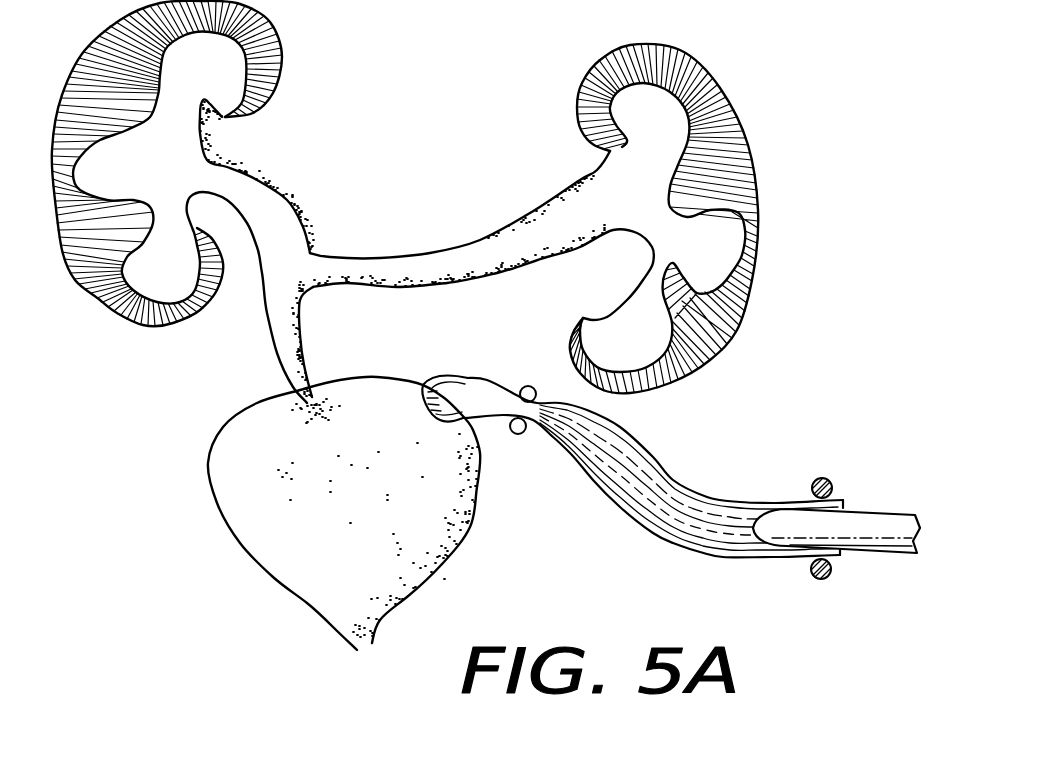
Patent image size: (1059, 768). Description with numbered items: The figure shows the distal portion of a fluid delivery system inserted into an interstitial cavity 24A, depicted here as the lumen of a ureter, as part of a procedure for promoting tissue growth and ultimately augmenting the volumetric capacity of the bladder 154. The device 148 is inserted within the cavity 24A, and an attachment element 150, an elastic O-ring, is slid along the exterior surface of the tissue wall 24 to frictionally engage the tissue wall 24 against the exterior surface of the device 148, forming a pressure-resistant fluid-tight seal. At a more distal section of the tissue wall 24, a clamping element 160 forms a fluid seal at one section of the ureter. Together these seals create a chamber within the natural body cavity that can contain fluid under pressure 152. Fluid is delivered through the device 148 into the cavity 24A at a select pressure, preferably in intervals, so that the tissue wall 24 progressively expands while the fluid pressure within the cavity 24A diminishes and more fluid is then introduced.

The tissue wall 24 is at (632, 468).
The interstitial cavity 24A is at (692, 508).
The device 148 is at (873, 520).
The attachment element 150 is at (832, 573).
The fluid under pressure 152 is at (653, 503).
The bladder 154 is at (430, 553).
The clamping element 160 is at (528, 386).